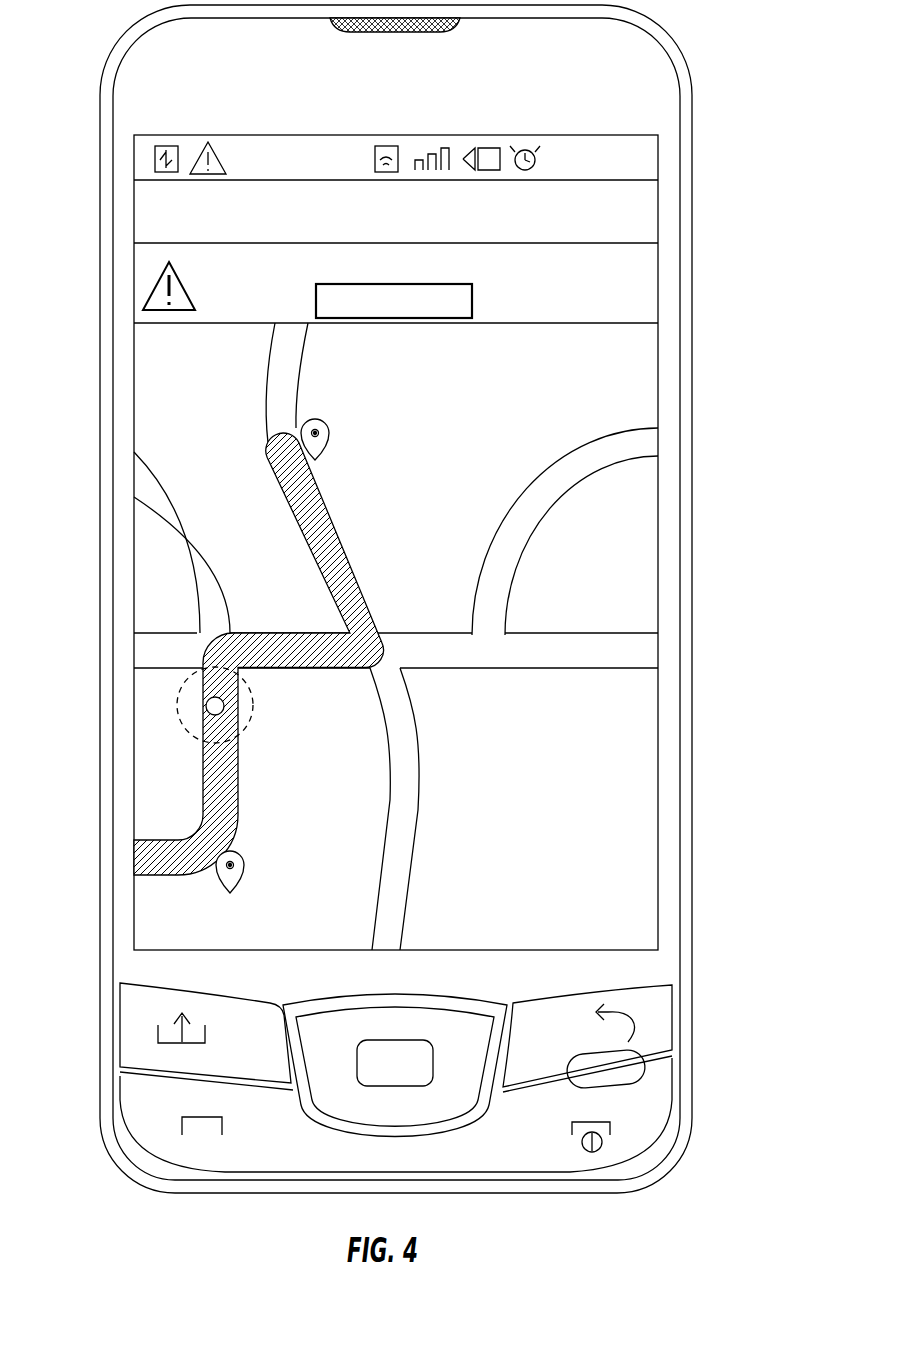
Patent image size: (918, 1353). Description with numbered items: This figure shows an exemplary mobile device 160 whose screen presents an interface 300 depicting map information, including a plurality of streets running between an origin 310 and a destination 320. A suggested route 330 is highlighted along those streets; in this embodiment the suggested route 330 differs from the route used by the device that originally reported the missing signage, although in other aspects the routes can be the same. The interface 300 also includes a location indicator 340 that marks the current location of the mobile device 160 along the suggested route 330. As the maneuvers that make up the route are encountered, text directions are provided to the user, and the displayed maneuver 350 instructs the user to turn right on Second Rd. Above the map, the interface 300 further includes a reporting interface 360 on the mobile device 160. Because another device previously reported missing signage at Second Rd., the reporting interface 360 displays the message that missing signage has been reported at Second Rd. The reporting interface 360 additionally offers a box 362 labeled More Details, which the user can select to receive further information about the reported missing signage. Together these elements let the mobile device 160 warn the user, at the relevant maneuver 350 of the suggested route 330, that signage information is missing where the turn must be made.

The mobile device 160 is at (396, 599).
The interface 300 is at (630, 355).
The origin 310 is at (215, 877).
The destination 320 is at (328, 450).
The suggested route 330 is at (372, 592).
The location indicator 340 is at (205, 705).
The maneuver 350 is at (536, 222).
The reporting interface 360 is at (595, 293).
The box 362 is at (316, 298).